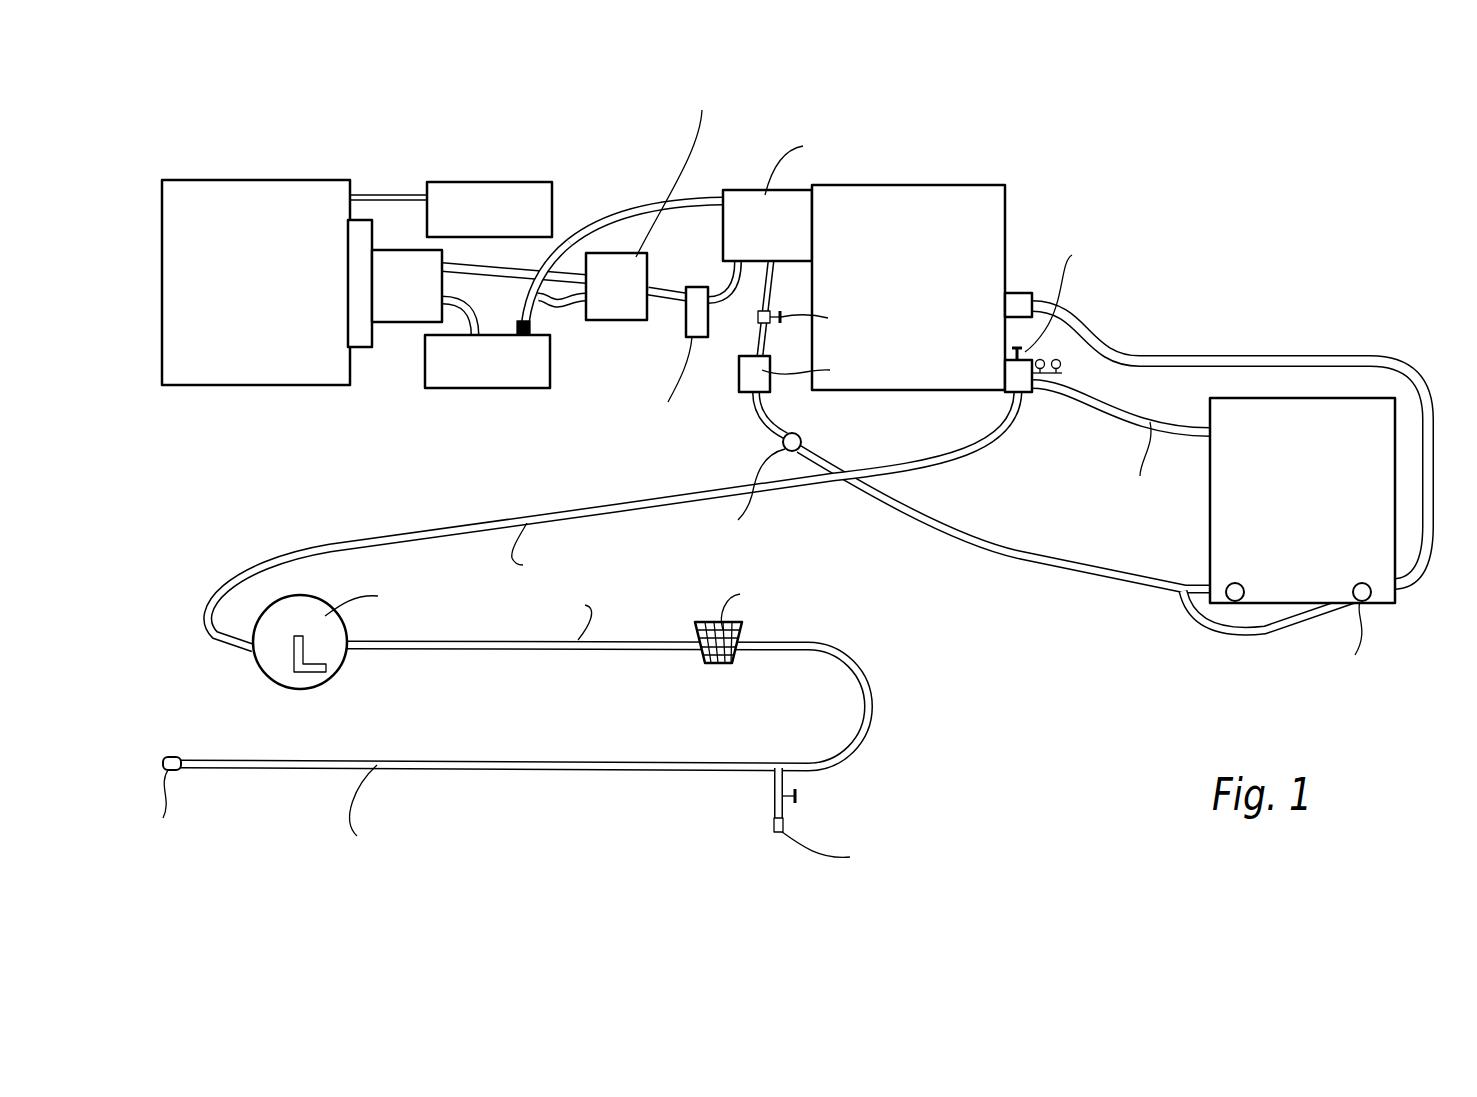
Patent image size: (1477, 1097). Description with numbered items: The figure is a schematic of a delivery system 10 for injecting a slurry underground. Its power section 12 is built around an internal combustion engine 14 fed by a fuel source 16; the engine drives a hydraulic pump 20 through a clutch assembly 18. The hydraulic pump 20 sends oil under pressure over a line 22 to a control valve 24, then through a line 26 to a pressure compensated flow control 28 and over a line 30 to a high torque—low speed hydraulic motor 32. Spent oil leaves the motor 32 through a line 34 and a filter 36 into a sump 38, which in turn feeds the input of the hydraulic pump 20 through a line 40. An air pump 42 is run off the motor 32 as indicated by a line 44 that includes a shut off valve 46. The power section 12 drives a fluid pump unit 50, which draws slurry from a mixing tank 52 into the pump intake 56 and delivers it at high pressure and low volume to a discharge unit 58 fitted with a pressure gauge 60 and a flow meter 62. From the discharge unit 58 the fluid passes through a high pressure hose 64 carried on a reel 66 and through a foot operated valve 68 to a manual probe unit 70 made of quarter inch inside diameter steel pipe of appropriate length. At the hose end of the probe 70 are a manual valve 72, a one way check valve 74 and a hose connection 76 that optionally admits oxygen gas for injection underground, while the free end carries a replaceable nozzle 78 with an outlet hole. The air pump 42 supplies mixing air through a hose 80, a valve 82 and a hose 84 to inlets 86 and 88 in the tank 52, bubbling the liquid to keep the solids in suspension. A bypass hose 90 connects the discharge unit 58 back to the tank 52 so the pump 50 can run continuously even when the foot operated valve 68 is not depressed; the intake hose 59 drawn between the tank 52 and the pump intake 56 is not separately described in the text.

The delivery system 10 is at (1060, 696).
The power section 12 is at (482, 102).
The internal combustion engine 14 is at (268, 282).
The fuel source 16 is at (497, 183).
The clutch assembly 18 is at (362, 233).
The hydraulic pump 20 is at (403, 305).
The line 22 is at (524, 270).
The control valve 24 is at (637, 300).
The line 26 is at (666, 290).
The pressure compensated flow control 28 is at (703, 340).
The line 30 is at (726, 298).
The high torque—low speed hydraulic motor 32 is at (777, 234).
The line 34 is at (648, 207).
The filter 36 is at (531, 328).
The sump 38 is at (540, 386).
The line 40 is at (470, 322).
The air pump 42 is at (770, 393).
The line 44 is at (765, 333).
The shut off valve 46 is at (770, 312).
The fluid pump unit 50 is at (917, 274).
The mixing tank 52 is at (1310, 549).
The pump intake 56 is at (1022, 300).
The discharge unit 58 is at (1020, 392).
The intake hose 59 is at (1322, 358).
The pressure gauge 60 is at (1040, 357).
The flow meter 62 is at (1060, 362).
The high pressure hose 64 is at (327, 550).
The reel 66 is at (342, 630).
The foot operated valve 68 is at (842, 621).
The probe unit 70 is at (545, 760).
The manual valve 72 is at (803, 794).
The check valve 74 is at (787, 822).
The hose connection 76 is at (774, 832).
The replaceable nozzle 78 is at (172, 758).
The hose 80 is at (778, 426).
The valve 82 is at (802, 443).
The hose 84 is at (1063, 568).
The inlet 86 is at (1238, 583).
The inlet 88 is at (1360, 583).
The bypass hose 90 is at (1121, 469).